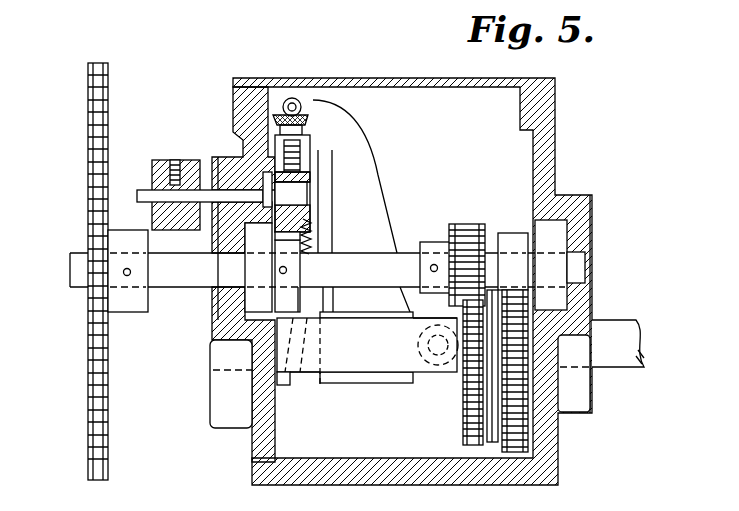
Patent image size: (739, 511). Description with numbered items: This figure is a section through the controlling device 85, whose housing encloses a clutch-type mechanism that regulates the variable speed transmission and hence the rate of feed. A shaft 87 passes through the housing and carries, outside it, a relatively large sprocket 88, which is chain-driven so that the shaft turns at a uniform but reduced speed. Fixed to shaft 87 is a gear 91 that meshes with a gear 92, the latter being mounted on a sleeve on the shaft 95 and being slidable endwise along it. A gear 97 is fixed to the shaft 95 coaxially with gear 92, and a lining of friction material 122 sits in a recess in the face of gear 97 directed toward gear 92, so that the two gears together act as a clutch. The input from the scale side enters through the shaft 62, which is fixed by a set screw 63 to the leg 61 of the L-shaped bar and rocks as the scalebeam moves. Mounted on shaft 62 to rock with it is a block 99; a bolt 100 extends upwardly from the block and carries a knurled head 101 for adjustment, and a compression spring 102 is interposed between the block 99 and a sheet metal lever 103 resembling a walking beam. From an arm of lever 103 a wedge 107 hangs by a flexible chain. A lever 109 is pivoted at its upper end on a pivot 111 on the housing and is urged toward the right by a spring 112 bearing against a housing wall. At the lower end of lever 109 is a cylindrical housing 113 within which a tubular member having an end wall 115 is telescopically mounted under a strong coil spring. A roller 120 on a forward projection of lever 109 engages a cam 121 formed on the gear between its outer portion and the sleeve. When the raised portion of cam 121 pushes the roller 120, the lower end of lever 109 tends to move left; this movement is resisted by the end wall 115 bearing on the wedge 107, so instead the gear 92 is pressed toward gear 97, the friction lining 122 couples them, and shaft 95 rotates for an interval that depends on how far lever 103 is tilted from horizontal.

The controlling device 85 is at (560, 114).
The shaft 87 is at (177, 288).
The sprocket 88 is at (92, 378).
The leg 61 is at (165, 162).
The shaft 62 is at (147, 193).
The set screw 63 is at (175, 158).
The gear 91 is at (470, 222).
The gear 92 is at (465, 418).
The shaft 95 is at (614, 322).
The gear 97 is at (528, 423).
The block 99 is at (348, 207).
The bolt 100 is at (322, 150).
The knurled head 101 is at (305, 115).
The compression spring 102 is at (283, 150).
The sheet metal lever 103 is at (312, 178).
The wedge 107 is at (285, 385).
The lever 109 is at (367, 183).
The pivot 111 is at (295, 98).
The spring 112 is at (305, 223).
The cylindrical housing 113 is at (368, 380).
The end wall 115 is at (300, 358).
The roller 120 is at (450, 372).
The cam 121 is at (440, 312).
The lining of friction material 122 is at (497, 442).